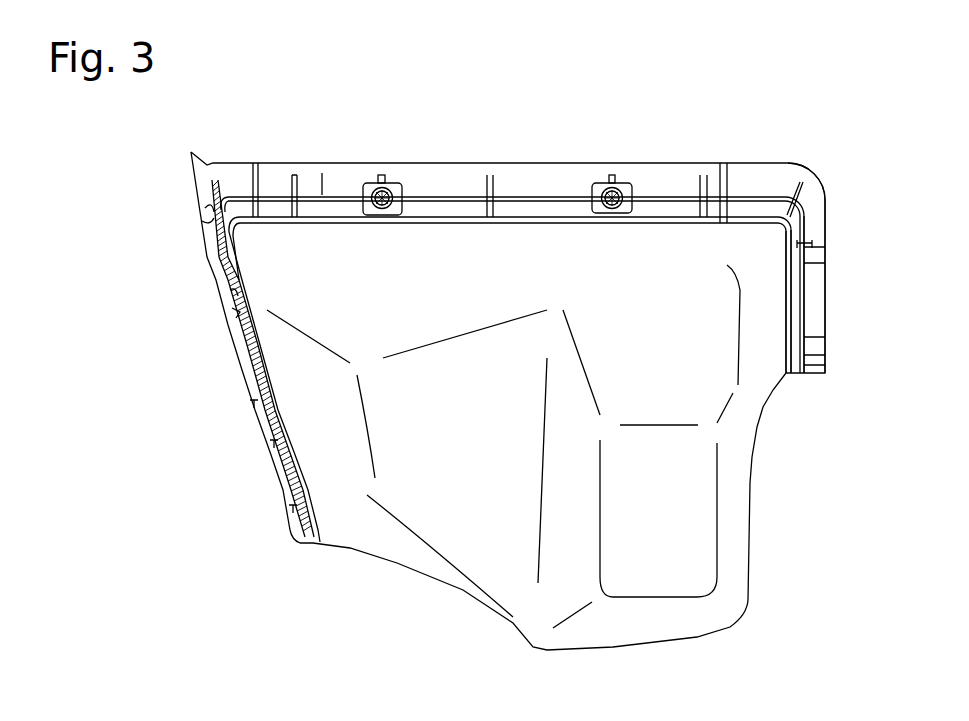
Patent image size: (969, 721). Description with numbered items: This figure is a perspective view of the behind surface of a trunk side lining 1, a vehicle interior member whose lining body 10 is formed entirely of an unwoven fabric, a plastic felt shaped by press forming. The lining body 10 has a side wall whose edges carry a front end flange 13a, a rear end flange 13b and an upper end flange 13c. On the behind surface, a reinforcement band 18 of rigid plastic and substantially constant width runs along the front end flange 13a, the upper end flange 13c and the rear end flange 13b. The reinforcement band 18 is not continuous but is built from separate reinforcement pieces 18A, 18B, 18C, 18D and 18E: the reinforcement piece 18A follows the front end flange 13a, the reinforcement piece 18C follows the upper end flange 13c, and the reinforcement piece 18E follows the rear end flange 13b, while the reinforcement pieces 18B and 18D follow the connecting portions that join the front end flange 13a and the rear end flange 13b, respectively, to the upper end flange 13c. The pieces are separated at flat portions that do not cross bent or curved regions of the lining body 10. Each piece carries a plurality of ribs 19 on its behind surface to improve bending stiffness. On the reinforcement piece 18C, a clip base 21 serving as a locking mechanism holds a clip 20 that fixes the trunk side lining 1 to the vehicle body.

The trunk side lining 1 is at (751, 128).
The lining body 10 is at (765, 418).
The front end flange 13a is at (245, 362).
The rear end flange 13b is at (808, 298).
The upper end flange 13c is at (510, 178).
The reinforcement band 18 is at (596, 162).
The reinforcement piece 18A is at (262, 410).
The reinforcement piece 18B is at (232, 178).
The reinforcement piece 18C is at (672, 168).
The reinforcement piece 18D is at (786, 170).
The reinforcement piece 18E is at (818, 322).
The rib 19 is at (322, 175).
The clip 20 is at (398, 182).
The clip base 21 is at (375, 186).